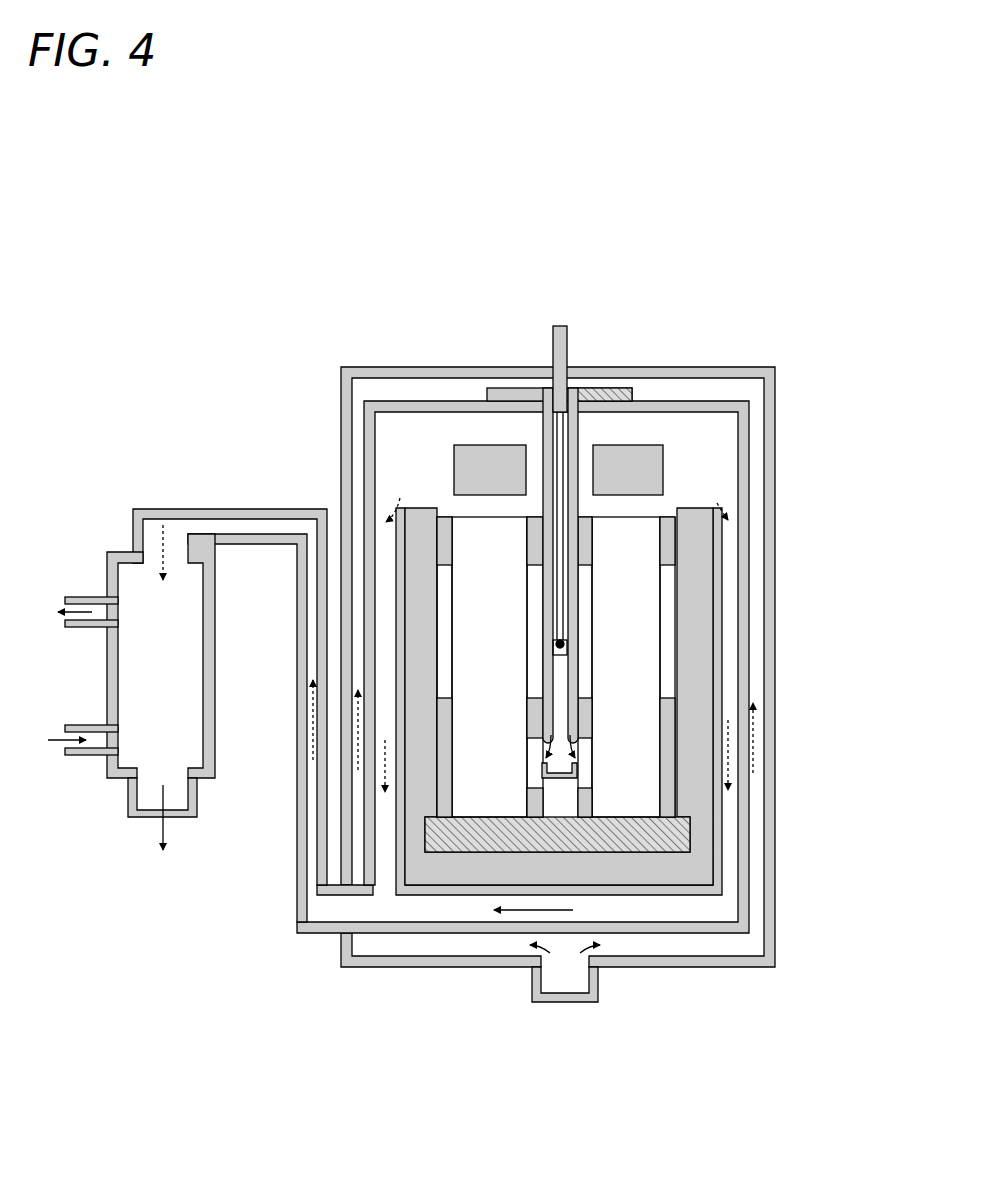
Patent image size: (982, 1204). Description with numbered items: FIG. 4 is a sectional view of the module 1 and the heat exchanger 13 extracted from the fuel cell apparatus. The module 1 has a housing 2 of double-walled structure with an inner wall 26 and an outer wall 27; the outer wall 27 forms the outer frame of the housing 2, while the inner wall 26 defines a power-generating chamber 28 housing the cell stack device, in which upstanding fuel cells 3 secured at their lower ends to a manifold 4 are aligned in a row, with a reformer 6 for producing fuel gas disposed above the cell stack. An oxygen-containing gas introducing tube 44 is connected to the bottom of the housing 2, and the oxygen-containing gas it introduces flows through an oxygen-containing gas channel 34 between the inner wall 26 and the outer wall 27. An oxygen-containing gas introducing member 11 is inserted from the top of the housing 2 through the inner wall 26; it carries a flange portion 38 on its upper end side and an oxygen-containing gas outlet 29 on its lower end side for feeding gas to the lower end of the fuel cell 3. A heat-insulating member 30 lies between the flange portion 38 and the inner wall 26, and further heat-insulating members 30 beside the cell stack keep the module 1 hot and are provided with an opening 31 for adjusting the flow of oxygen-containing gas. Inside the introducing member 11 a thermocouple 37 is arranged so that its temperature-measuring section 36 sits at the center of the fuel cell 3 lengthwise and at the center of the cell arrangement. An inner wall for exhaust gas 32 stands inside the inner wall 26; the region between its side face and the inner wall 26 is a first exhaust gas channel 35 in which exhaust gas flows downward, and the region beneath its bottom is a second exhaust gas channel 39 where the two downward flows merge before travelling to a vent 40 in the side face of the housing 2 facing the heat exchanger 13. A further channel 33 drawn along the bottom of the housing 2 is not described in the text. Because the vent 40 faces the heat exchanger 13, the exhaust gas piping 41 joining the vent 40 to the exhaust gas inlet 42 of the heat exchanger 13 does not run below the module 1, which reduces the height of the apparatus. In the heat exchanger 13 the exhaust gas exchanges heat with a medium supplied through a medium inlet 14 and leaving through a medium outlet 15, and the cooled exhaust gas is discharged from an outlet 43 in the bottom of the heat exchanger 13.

The module 1 is at (348, 348).
The housing 2 is at (340, 370).
The fuel cell 3 is at (738, 448).
The manifold 4 is at (650, 838).
The reformer 6 is at (660, 445).
The oxygen-containing gas introducing member 11 is at (547, 427).
The heat exchanger 13 is at (107, 558).
The medium inlet 14 is at (95, 752).
The medium outlet 15 is at (67, 598).
The inner wall 26 is at (747, 488).
The outer wall 27 is at (710, 366).
The power-generating chamber 28 is at (394, 428).
The oxygen-containing gas outlet 29 is at (543, 752).
The heat-insulating member 30 is at (633, 393).
The opening 31 is at (580, 665).
The inner wall for exhaust gas 32 is at (712, 565).
The bottom gas channel 33 is at (398, 945).
The oxygen-containing gas channel 34 is at (755, 815).
The first exhaust gas channel 35 is at (388, 815).
The temperature-measuring section 36 is at (553, 640).
The thermocouple 37 is at (568, 358).
The flange portion 38 is at (588, 392).
The second exhaust gas channel 39 is at (667, 910).
The vent 40 is at (347, 908).
The exhaust gas piping 41 is at (227, 509).
The exhaust gas inlet 42 is at (130, 552).
The outlet 43 is at (128, 800).
The oxygen-containing gas introducing tube 44 is at (535, 985).